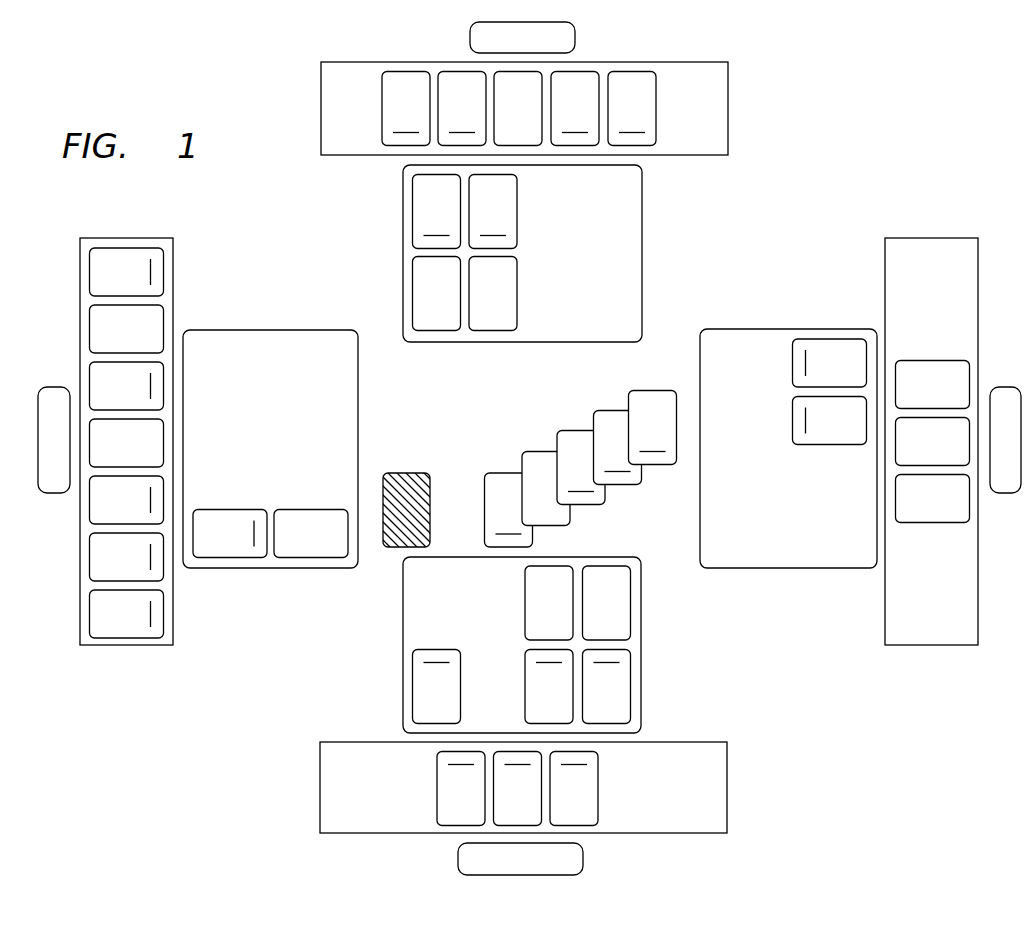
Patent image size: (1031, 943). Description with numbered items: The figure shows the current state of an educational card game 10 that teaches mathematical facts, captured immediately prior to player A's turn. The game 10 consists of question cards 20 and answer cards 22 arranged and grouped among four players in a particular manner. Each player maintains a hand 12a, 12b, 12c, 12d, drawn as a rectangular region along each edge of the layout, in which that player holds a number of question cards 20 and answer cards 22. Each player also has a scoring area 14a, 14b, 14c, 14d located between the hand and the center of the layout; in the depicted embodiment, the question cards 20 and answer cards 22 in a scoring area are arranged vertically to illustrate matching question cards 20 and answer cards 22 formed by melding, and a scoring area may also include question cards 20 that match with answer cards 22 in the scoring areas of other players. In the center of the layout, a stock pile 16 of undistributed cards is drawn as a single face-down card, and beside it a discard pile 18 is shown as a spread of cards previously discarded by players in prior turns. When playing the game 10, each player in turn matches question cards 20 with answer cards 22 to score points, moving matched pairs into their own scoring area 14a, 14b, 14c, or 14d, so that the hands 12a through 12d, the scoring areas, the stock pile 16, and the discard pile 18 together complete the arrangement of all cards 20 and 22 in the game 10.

The game 10 is at (840, 89).
The hand 12a is at (728, 109).
The hand 12b is at (125, 238).
The hand 12c is at (727, 792).
The hand 12d is at (932, 238).
The scoring area 14a is at (642, 270).
The scoring area 14b is at (268, 330).
The scoring area 14c is at (641, 646).
The scoring area 14d is at (790, 329).
The stock pile 16 is at (400, 473).
The discard pile 18 is at (680, 383).
The question card 20 is at (584, 72).
The answer card 22 is at (631, 604).